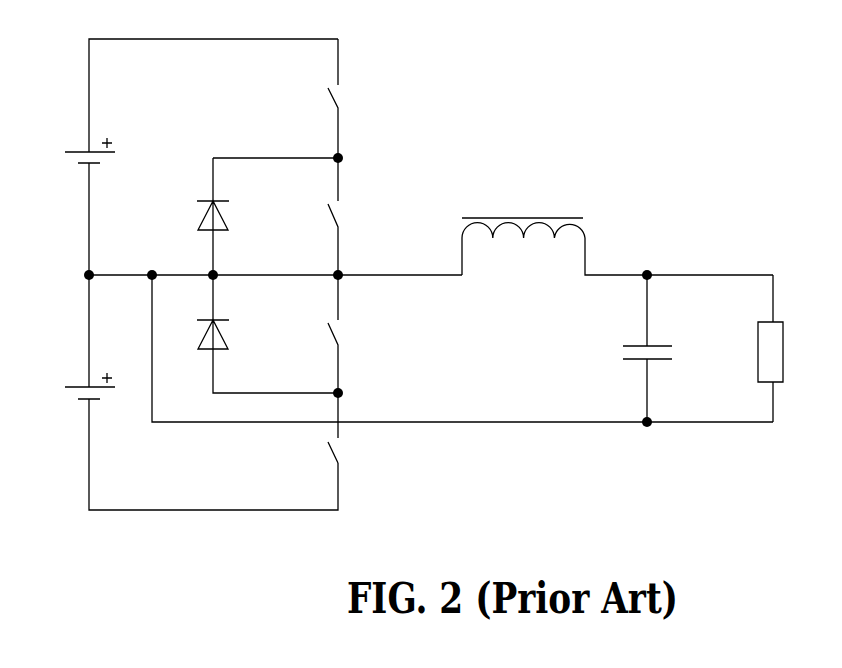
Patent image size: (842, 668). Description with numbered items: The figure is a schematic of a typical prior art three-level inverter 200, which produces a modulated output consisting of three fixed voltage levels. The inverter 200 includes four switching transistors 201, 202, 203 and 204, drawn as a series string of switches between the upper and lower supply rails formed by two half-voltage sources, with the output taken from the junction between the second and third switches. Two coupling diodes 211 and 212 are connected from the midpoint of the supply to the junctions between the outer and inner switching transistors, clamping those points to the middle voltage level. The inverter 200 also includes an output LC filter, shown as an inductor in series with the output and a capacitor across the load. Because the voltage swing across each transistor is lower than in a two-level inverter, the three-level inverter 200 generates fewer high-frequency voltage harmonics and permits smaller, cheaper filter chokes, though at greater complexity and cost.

The three-level inverter 200 is at (463, 158).
The switching transistor 201 is at (363, 98).
The switching transistor 202 is at (360, 216).
The switching transistor 203 is at (360, 334).
The switching transistor 204 is at (360, 431).
The coupling diode 211 is at (238, 217).
The coupling diode 212 is at (239, 336).